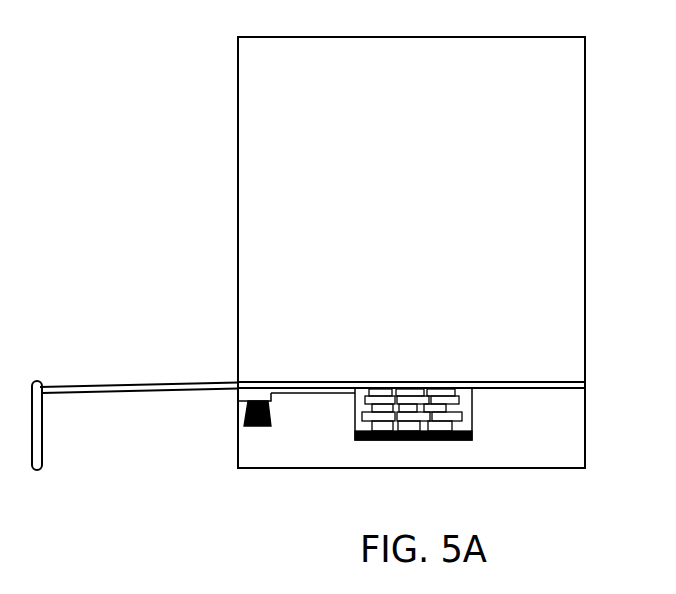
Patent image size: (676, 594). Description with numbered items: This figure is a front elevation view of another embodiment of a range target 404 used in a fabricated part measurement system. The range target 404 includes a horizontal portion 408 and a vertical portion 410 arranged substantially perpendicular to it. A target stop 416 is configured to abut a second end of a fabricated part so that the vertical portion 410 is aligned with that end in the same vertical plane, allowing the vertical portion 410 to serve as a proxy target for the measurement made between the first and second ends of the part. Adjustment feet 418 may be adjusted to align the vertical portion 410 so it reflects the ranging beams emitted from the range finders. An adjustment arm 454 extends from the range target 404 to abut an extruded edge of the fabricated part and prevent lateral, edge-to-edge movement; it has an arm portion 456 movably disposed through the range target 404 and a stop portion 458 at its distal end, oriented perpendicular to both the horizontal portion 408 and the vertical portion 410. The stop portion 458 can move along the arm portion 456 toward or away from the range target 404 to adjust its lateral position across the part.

The range target 404 is at (90, 116).
The horizontal portion 408 is at (322, 381).
The vertical portion 410 is at (565, 79).
The target stop 416 is at (442, 468).
The adjustment feet 418 is at (331, 427).
The adjustment arm 454 is at (92, 323).
The arm portion 456 is at (150, 393).
The stop portion 458 is at (32, 432).